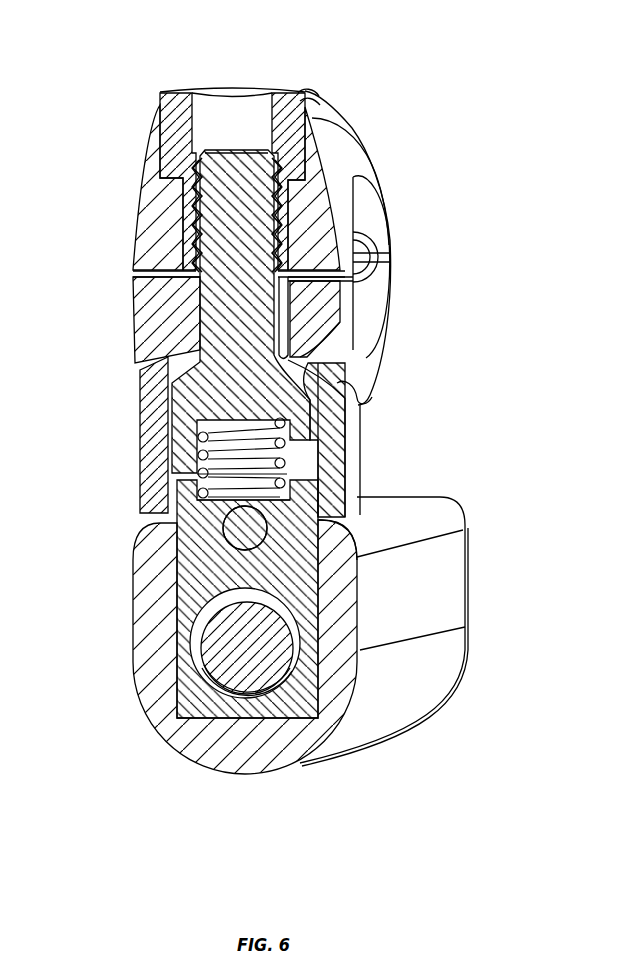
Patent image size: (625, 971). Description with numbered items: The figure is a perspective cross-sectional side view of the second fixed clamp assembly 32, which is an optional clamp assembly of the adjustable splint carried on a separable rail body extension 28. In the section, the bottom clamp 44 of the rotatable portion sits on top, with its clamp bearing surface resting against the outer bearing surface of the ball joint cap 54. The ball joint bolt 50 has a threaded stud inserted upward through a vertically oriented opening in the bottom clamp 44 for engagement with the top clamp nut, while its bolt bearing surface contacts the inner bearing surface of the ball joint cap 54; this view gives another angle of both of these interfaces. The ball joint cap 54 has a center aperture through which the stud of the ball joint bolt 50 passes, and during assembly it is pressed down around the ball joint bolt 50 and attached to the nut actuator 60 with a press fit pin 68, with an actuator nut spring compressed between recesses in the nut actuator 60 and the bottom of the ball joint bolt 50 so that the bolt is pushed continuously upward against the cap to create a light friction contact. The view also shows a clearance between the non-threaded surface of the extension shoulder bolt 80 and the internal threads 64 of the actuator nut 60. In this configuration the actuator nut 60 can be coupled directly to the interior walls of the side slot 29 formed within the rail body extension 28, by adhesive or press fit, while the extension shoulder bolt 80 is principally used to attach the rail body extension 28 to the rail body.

The second fixed clamp assembly 32 is at (150, 64).
The bottom clamp 44 is at (135, 313).
The ball joint bolt 50 is at (292, 318).
The ball joint cap 54 is at (353, 428).
The nut actuator 60 is at (318, 517).
The press fit pin 68 is at (224, 527).
The extension shoulder bolt 80 is at (250, 652).
The internal threads 64 is at (178, 700).
The rail body extension 28 is at (202, 745).
The side slot 29 is at (285, 742).